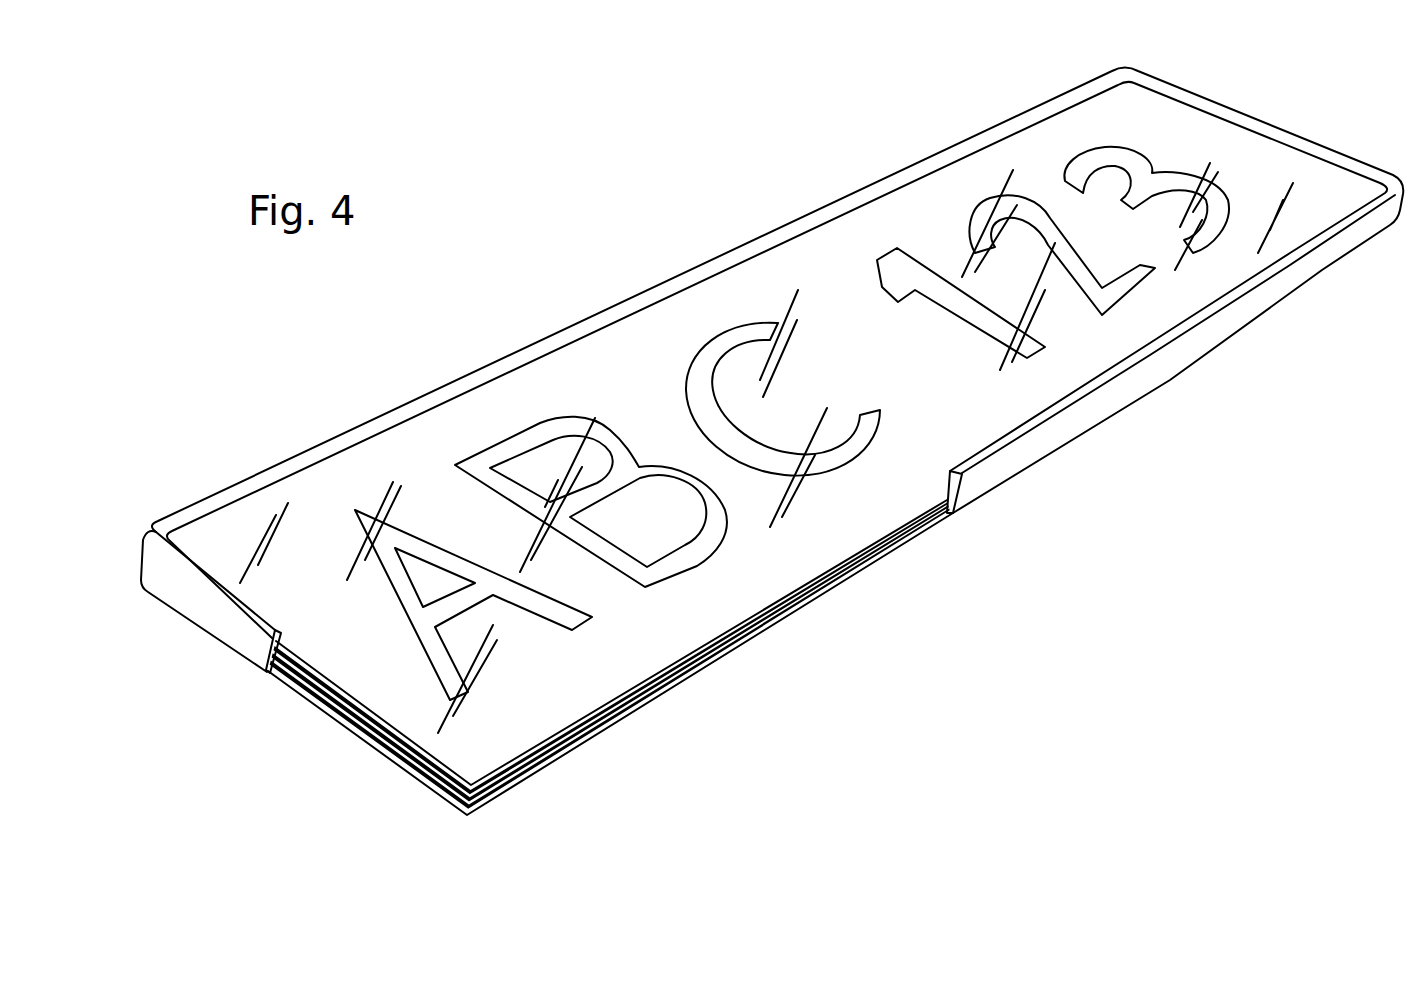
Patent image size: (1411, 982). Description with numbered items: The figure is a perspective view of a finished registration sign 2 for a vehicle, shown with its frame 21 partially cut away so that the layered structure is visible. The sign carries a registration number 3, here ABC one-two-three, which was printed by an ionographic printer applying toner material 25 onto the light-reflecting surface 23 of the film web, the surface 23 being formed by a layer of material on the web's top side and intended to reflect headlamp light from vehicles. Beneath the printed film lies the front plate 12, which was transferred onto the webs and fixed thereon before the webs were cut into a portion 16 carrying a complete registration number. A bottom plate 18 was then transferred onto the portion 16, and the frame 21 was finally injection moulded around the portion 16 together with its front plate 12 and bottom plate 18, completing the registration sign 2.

The registration sign 2 is at (877, 155).
The registration number 3 is at (710, 298).
The front plate 12 is at (668, 637).
The portion 16 is at (613, 697).
The bottom plate 18 is at (811, 599).
The frame 21 is at (216, 626).
The light-reflecting surface 23 is at (320, 508).
The toner material 25 is at (402, 533).